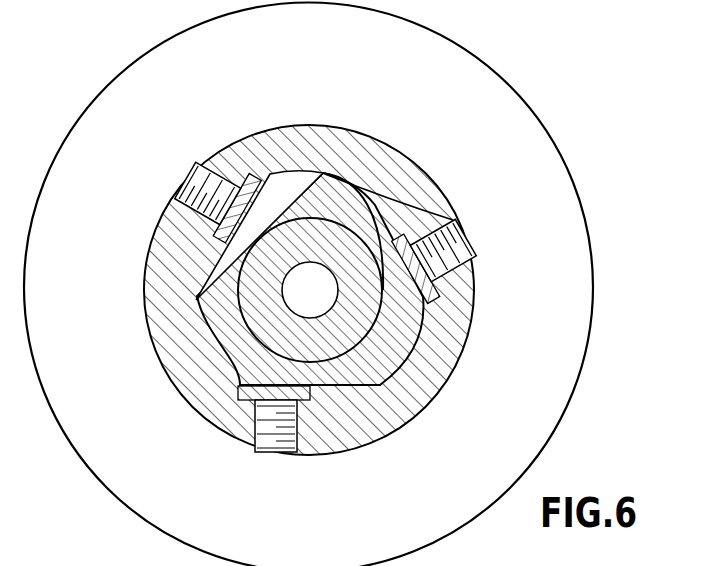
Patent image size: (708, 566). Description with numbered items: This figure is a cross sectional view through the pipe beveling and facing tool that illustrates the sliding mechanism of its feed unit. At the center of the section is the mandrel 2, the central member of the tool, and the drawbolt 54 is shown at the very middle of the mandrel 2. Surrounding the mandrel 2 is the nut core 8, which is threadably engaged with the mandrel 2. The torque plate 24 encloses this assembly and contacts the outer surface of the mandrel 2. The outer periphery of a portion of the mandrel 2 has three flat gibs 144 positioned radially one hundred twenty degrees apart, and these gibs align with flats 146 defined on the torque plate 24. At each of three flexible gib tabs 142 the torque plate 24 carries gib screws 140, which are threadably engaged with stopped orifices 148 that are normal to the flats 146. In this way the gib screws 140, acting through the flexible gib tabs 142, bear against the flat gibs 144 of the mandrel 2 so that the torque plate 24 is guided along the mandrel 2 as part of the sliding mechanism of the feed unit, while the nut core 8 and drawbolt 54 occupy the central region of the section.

The mandrel 2 is at (390, 350).
The nut core 8 is at (257, 317).
The drawbolt 54 is at (313, 280).
The torque plate 24 is at (447, 198).
The gib screws 140 is at (183, 185).
The flexible gib tabs 142 is at (472, 281).
The flat gibs 144 is at (424, 185).
The flats 146 is at (393, 428).
The stopped orifices 148 is at (193, 170).